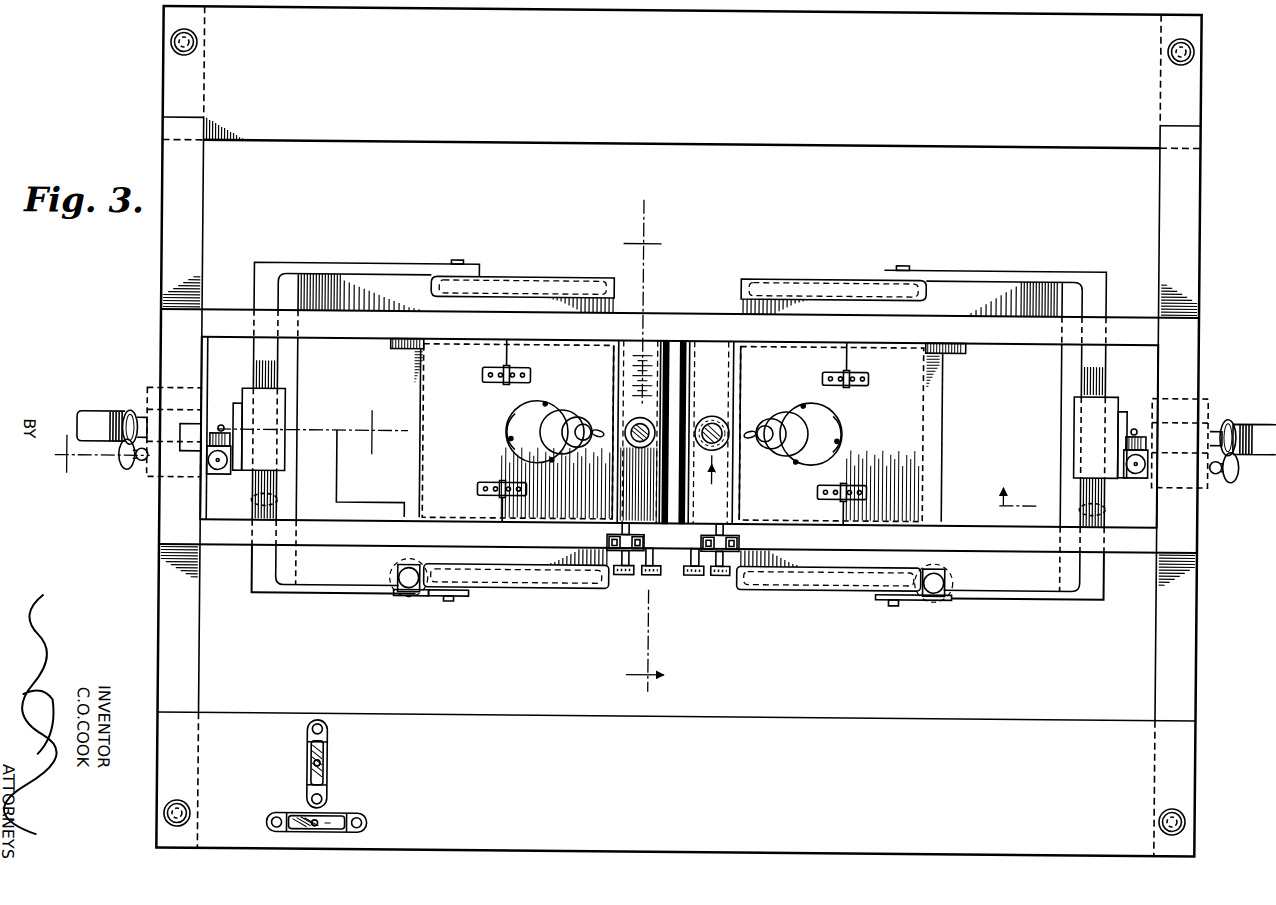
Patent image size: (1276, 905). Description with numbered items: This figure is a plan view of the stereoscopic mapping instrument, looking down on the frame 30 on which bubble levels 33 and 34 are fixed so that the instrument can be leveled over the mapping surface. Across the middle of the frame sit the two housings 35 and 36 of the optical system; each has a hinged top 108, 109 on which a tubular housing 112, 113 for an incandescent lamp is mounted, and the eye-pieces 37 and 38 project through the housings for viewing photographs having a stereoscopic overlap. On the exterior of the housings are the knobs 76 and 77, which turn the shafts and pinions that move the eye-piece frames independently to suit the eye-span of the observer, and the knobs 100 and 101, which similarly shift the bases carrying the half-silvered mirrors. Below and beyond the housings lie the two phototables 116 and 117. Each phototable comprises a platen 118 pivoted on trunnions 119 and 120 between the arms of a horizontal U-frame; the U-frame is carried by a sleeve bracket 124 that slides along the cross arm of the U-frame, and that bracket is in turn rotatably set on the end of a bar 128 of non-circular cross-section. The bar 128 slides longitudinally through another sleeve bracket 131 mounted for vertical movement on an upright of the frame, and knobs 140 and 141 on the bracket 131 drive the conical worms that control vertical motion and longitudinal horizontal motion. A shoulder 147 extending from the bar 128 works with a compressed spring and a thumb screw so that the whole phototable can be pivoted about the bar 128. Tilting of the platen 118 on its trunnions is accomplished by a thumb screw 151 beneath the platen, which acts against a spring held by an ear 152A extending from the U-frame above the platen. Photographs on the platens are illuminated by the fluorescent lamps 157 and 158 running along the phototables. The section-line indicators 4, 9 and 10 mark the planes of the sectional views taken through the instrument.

The frame 30 is at (160, 107).
The phototable 116 is at (407, 263).
The phototable 117 is at (1015, 267).
The trunnion 119 is at (457, 262).
The fluorescent lamp 157 is at (549, 288).
The section line 10- 10 is at (644, 451).
The section line 9- 9 is at (466, 464).
The section line 4- 4 is at (538, 477).
The bar 128 is at (88, 416).
The knob 141 is at (131, 414).
The knob 140 is at (126, 474).
The sleeve bracket 131 is at (153, 400).
The sleeve bracket 124 is at (287, 421).
The shoulder 147 is at (219, 475).
The housing 35 is at (501, 430).
The housing 36 is at (852, 434).
The hinged top 108 is at (555, 482).
The hinged top 109 is at (841, 485).
The tubular housing 112 is at (568, 418).
The tubular housing 113 is at (775, 418).
The eye-piece 37 is at (641, 449).
The eye-piece 38 is at (712, 416).
The platen 118 is at (311, 571).
The fluorescent lamp 158 is at (546, 580).
The thumb screw 151 is at (395, 583).
The ear 152A is at (412, 598).
The trunnion 120 is at (458, 604).
The knob 100 is at (618, 573).
The knob 76 is at (649, 582).
The knob 101 is at (700, 570).
The knob 77 is at (691, 580).
The bubble level 33 is at (343, 756).
The bubble level 34 is at (371, 819).